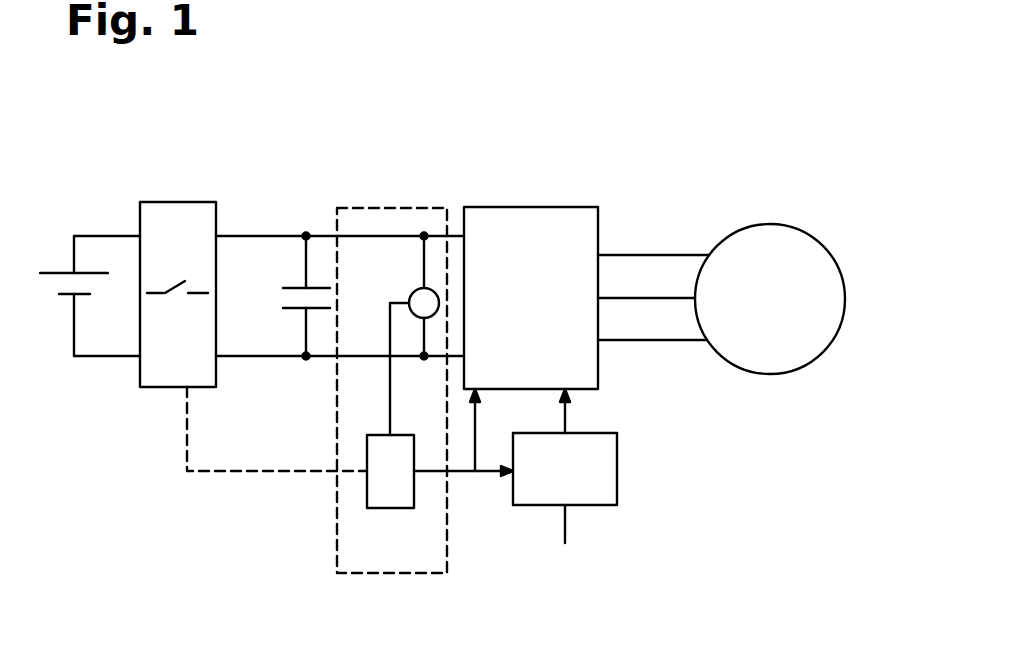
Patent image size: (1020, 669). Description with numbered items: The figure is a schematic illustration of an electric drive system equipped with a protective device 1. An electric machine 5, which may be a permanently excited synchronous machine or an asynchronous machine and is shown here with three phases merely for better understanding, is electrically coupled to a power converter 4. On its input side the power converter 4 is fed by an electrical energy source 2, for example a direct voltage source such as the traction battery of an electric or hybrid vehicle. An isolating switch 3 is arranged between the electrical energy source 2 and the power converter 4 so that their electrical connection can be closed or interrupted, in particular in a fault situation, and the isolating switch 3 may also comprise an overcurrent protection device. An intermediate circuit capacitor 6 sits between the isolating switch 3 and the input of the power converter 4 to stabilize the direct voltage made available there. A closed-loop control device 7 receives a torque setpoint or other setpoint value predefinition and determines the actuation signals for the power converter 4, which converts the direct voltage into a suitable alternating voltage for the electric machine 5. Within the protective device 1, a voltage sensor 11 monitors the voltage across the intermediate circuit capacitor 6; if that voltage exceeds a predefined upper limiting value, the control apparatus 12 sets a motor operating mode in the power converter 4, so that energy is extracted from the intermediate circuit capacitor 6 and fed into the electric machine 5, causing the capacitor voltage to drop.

The protective device 1 is at (401, 208).
The electrical energy source 2 is at (56, 289).
The isolating switch 3 is at (190, 202).
The power converter 4 is at (532, 207).
The electric machine 5 is at (770, 224).
The intermediate circuit capacitor 6 is at (282, 297).
The closed-loop control device 7 is at (620, 470).
The voltage sensor 11 is at (410, 292).
The control apparatus 12 is at (367, 497).